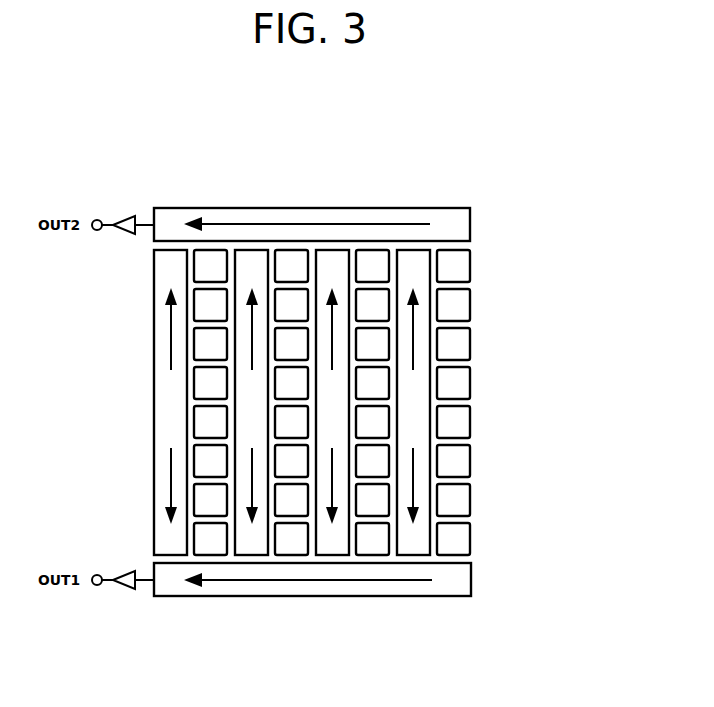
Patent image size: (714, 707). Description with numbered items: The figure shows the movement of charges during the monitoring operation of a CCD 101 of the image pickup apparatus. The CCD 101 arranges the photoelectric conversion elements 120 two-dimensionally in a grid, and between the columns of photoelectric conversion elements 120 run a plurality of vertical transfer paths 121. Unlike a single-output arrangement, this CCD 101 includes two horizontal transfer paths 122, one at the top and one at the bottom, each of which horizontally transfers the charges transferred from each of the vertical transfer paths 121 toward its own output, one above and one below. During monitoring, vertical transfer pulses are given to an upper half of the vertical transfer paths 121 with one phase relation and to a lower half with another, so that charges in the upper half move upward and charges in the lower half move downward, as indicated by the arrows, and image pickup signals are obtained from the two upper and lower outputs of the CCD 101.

The CCD 101 is at (482, 180).
The photoelectric conversion elements 120 is at (460, 263).
The vertical transfer paths 121 is at (172, 407).
The horizontal transfer paths 122 is at (461, 218).